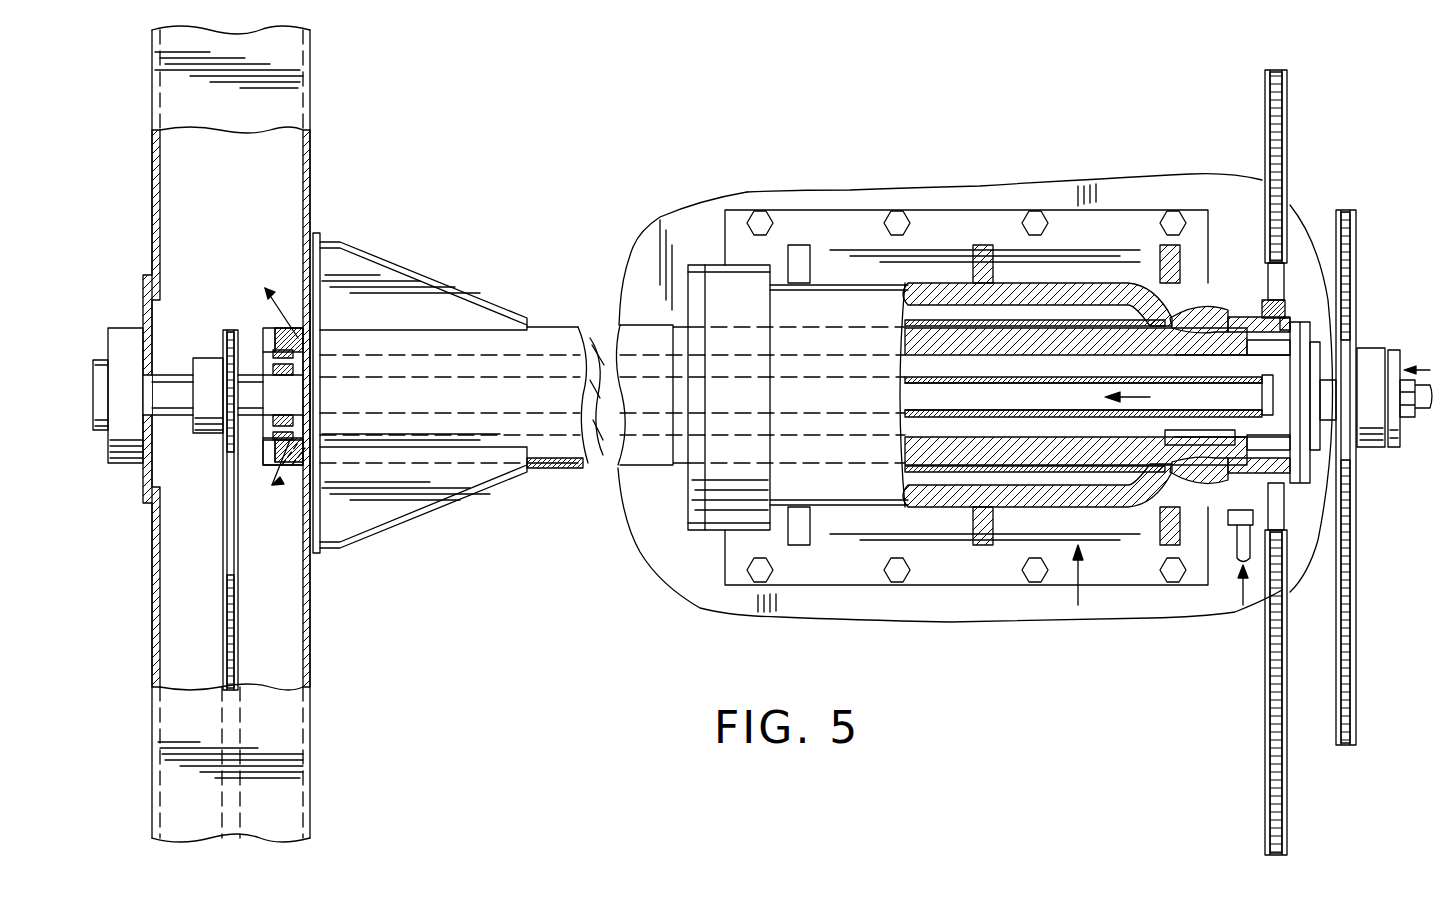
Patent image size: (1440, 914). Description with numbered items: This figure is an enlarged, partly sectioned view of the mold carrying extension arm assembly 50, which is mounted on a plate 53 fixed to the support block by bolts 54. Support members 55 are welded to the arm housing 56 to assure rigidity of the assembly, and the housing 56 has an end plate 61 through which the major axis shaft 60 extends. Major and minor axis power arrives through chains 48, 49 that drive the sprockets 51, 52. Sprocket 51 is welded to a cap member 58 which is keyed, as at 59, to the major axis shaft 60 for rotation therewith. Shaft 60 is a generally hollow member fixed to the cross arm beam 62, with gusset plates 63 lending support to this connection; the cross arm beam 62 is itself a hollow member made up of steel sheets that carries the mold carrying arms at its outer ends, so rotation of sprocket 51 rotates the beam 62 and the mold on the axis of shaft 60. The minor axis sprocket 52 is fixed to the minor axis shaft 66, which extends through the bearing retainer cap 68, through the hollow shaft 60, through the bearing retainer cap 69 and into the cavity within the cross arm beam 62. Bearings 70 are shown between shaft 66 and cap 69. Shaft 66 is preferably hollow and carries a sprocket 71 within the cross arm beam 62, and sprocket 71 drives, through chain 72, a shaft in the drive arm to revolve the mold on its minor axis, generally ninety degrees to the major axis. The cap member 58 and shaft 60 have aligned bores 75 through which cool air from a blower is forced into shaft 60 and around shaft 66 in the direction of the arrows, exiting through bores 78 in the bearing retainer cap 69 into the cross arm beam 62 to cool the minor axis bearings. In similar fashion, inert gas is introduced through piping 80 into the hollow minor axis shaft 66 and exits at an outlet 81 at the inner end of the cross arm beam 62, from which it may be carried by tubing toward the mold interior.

The chain 48 is at (1287, 800).
The chain 49 is at (1360, 672).
The mold carrying extension arm assembly 50 is at (1080, 585).
The sprocket 51 is at (1282, 313).
The minor axis sprocket 52 is at (1350, 340).
The plate 53 is at (1103, 215).
The bolts 54 is at (1180, 223).
The support members 55 is at (988, 548).
The arm housing 56 is at (1103, 502).
The cap member 58 is at (1252, 316).
The key 59 is at (1287, 332).
The major axis shaft 60 is at (1038, 320).
The end plate 61 is at (722, 268).
The cross arm beam 62 is at (310, 655).
The gusset plates 63 is at (432, 292).
The minor axis shaft 66 is at (910, 370).
The bearing retainer cap 68 is at (1325, 425).
The bearing retainer cap 69 is at (263, 355).
The bearings 70 is at (272, 345).
The sprocket 71 is at (224, 345).
The chain 72 is at (255, 566).
The aligned bores 75 is at (1232, 433).
The bores 78 is at (320, 332).
The piping 80 is at (1424, 412).
The outlet 81 is at (95, 378).